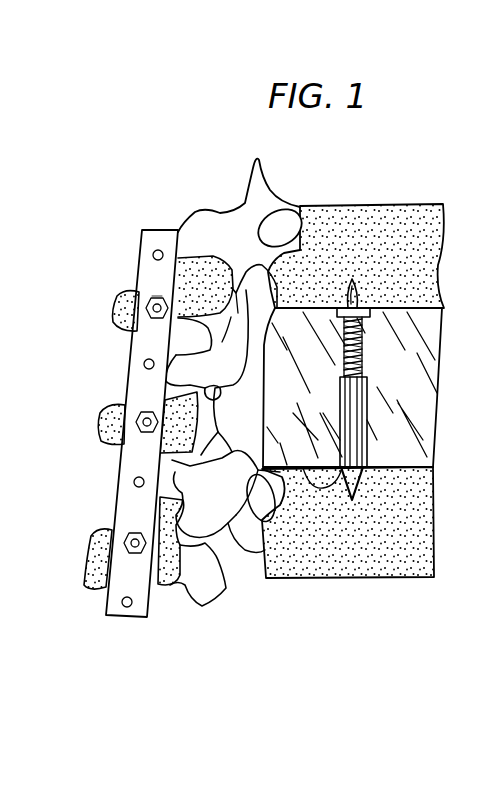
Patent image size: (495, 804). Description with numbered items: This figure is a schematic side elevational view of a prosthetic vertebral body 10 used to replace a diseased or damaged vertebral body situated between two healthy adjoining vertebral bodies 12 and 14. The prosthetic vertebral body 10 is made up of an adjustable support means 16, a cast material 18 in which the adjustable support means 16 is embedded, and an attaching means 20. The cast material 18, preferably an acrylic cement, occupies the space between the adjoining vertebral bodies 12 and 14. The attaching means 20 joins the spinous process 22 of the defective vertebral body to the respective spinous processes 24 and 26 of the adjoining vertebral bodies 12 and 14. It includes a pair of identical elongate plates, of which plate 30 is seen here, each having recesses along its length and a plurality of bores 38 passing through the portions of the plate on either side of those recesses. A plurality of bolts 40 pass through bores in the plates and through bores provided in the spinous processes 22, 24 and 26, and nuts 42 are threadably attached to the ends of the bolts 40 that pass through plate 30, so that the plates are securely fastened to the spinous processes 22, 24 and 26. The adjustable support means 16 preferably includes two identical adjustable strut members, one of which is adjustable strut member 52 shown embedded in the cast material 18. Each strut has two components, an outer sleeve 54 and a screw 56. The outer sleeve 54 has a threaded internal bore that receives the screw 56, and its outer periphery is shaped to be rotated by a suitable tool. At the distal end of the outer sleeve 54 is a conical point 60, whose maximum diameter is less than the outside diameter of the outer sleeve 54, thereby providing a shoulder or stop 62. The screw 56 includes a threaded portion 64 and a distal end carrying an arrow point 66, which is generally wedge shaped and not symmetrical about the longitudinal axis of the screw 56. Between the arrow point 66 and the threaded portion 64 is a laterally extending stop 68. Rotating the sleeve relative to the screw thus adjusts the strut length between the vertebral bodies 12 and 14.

The prosthetic vertebral body 10 is at (447, 434).
The adjoining vertebral body 12 is at (430, 253).
The adjoining vertebral body 14 is at (352, 570).
The adjustable support means 16 is at (380, 370).
The cast material 18 is at (418, 460).
The attaching means 20 is at (112, 503).
The spinous process 22 is at (100, 425).
The spinous process 24 is at (115, 308).
The spinous process 26 is at (96, 538).
The elongate plate 30 is at (152, 294).
The bores 38 is at (158, 250).
The bolts 40 is at (157, 313).
The nuts 42 is at (153, 298).
The adjustable strut member 52 is at (360, 400).
The outer sleeve 54 is at (344, 420).
The screw 56 is at (364, 352).
The conical point 60 is at (362, 487).
The shoulder or stop 62 is at (307, 470).
The threaded portion 64 is at (346, 340).
The arrow point 66 is at (348, 288).
The laterally extending stop 68 is at (372, 312).